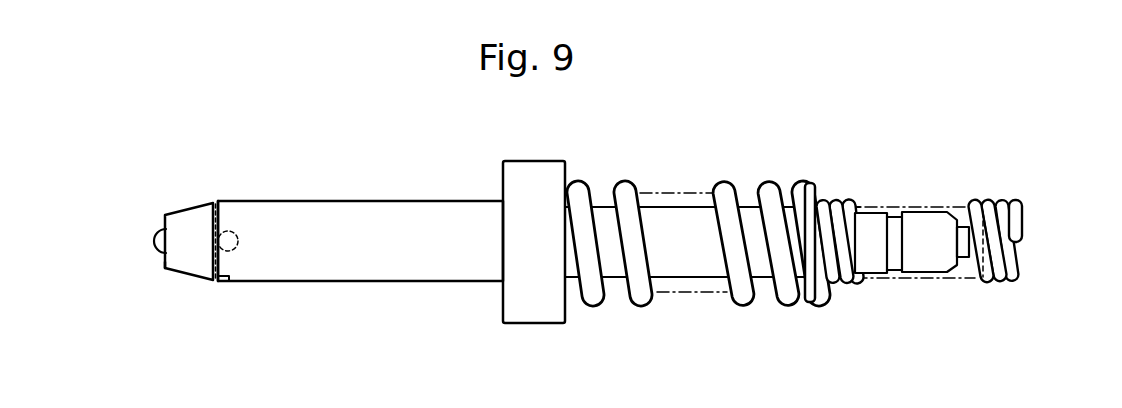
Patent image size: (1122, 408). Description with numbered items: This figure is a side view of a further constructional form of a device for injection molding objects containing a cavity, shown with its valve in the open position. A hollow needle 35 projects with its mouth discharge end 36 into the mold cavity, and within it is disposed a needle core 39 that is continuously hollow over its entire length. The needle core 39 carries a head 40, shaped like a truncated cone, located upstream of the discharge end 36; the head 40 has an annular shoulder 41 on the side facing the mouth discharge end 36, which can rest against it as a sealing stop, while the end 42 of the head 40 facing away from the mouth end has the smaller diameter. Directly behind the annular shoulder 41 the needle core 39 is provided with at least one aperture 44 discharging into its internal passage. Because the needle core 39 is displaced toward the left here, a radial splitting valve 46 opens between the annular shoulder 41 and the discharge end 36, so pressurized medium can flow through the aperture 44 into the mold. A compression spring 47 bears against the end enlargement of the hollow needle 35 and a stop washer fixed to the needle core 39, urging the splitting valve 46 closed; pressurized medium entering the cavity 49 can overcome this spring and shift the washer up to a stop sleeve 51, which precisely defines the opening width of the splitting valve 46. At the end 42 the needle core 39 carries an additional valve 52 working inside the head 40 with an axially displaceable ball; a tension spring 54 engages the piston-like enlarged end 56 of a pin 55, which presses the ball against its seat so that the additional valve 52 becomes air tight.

The hollow needle 35 is at (378, 225).
The mouth discharge end 36 is at (230, 281).
The needle core 39 is at (868, 222).
The head 40 is at (188, 262).
The annular shoulder 41 is at (210, 207).
The end of the head 42 is at (160, 263).
The aperture 44 is at (234, 235).
The radial splitting valve 46 is at (218, 200).
The compression spring 47 is at (713, 183).
The cavity 49 is at (918, 202).
The stop sleeve 51 is at (687, 262).
The additional valve 52 is at (160, 220).
The tension spring 54 is at (982, 285).
The pin 55 is at (963, 210).
The piston-like enlarged end 56 is at (1027, 227).